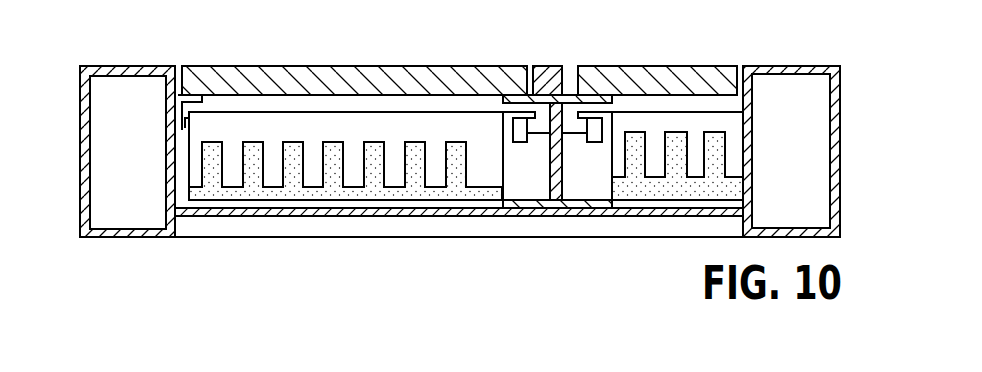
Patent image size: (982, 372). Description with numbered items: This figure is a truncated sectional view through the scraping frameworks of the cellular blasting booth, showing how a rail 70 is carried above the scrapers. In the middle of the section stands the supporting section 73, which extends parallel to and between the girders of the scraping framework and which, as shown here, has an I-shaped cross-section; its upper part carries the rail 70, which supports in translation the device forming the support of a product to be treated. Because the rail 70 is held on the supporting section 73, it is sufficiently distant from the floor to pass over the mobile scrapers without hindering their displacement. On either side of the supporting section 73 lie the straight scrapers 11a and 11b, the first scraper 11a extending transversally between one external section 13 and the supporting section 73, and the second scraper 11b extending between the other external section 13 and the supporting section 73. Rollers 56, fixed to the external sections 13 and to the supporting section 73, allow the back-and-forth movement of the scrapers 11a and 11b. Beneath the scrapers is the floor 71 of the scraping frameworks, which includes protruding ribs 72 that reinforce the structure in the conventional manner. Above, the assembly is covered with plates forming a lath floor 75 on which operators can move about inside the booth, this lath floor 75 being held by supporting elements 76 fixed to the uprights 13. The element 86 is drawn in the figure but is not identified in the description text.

The external section 13 is at (94, 68).
The supporting element 76 is at (193, 97).
The lath floor 75 is at (302, 75).
The straight scraper 11a is at (350, 130).
The rail 70 is at (544, 75).
The roller 56 is at (604, 130).
The straight scraper 11b is at (685, 122).
The connecting lead 86 is at (190, 120).
The protruding rib 72 is at (208, 226).
The floor 71 is at (444, 214).
The supporting section 73 is at (562, 172).